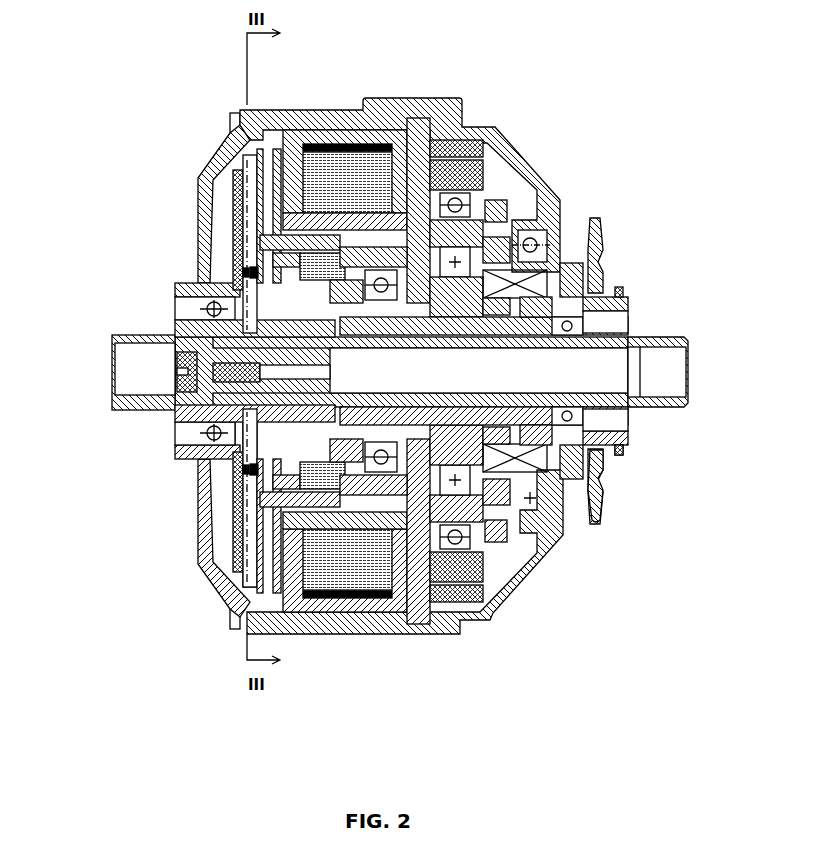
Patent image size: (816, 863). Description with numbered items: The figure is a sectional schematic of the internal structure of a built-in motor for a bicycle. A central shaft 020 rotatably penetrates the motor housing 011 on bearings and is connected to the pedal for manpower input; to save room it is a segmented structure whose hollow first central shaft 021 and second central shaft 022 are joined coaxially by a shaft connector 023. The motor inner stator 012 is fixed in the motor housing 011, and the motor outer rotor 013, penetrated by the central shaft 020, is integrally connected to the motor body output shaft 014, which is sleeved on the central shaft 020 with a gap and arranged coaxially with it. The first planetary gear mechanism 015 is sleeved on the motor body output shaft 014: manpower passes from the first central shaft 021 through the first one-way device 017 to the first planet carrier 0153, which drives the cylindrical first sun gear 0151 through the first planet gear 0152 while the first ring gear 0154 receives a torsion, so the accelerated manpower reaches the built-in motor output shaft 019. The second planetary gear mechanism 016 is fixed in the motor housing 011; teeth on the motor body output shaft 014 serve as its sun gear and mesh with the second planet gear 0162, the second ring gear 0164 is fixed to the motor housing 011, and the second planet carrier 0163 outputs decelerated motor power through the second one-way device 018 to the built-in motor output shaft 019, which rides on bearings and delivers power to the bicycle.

The motor housing 011 is at (417, 98).
The motor inner stator 012 is at (253, 111).
The motor outer rotor 013 is at (421, 120).
The motor body output shaft 014 is at (527, 460).
The first planetary gear mechanism 015 is at (62, 145).
The first sun gear 0151 is at (240, 298).
The first planet gear 0152 is at (262, 283).
The first planet carrier 0153 is at (288, 273).
The first ring gear 0154 is at (300, 284).
The second planetary gear mechanism 016 is at (699, 88).
The second planet gear 0162 is at (483, 168).
The second planet carrier 0163 is at (510, 200).
The second ring gear 0164 is at (495, 130).
The first one-way device 017 is at (240, 460).
The second one-way device 018 is at (590, 480).
The built-in motor output shaft 019 is at (623, 447).
The central shaft 020 is at (70, 490).
The first central shaft 021 is at (165, 410).
The second central shaft 022 is at (200, 416).
The shaft connector 023 is at (175, 348).